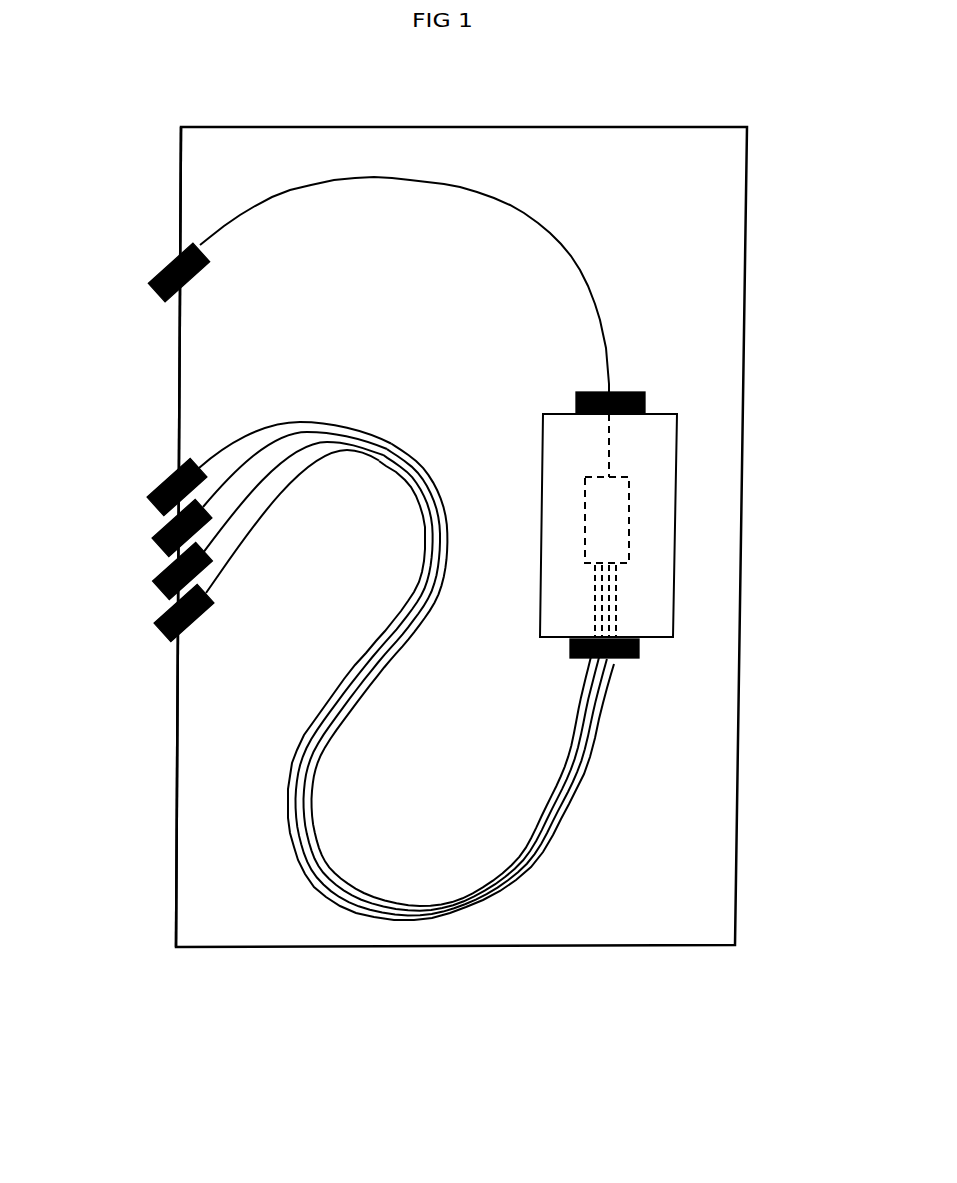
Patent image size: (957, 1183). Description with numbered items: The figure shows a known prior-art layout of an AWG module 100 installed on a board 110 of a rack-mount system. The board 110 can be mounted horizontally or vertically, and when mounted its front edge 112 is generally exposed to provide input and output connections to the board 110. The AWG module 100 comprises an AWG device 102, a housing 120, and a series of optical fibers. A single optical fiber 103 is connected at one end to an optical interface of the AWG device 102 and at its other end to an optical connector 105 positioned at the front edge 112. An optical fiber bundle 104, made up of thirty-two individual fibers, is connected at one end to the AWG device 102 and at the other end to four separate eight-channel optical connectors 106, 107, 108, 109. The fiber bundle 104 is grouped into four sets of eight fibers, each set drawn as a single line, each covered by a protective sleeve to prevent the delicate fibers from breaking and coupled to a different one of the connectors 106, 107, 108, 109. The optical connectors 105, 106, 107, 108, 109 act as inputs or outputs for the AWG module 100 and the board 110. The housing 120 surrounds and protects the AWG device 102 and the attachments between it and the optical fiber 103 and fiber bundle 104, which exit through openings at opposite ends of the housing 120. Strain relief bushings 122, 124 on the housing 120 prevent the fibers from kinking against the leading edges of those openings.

The AWG module 100 is at (690, 498).
The AWG device 102 is at (629, 510).
The optical fiber 103 is at (552, 232).
The optical fiber bundle 104 is at (585, 765).
The optical connector 105 is at (163, 267).
The 8-channel optical connector 106 is at (152, 492).
The 8-channel optical connector 107 is at (157, 530).
The 8-channel optical connector 108 is at (153, 587).
The 8-channel optical connector 109 is at (155, 632).
The board 110 is at (369, 947).
The front edge 112 is at (177, 764).
The housing 120 is at (673, 560).
The strain relief bushing 122 is at (633, 390).
The strain relief bushing 124 is at (640, 645).